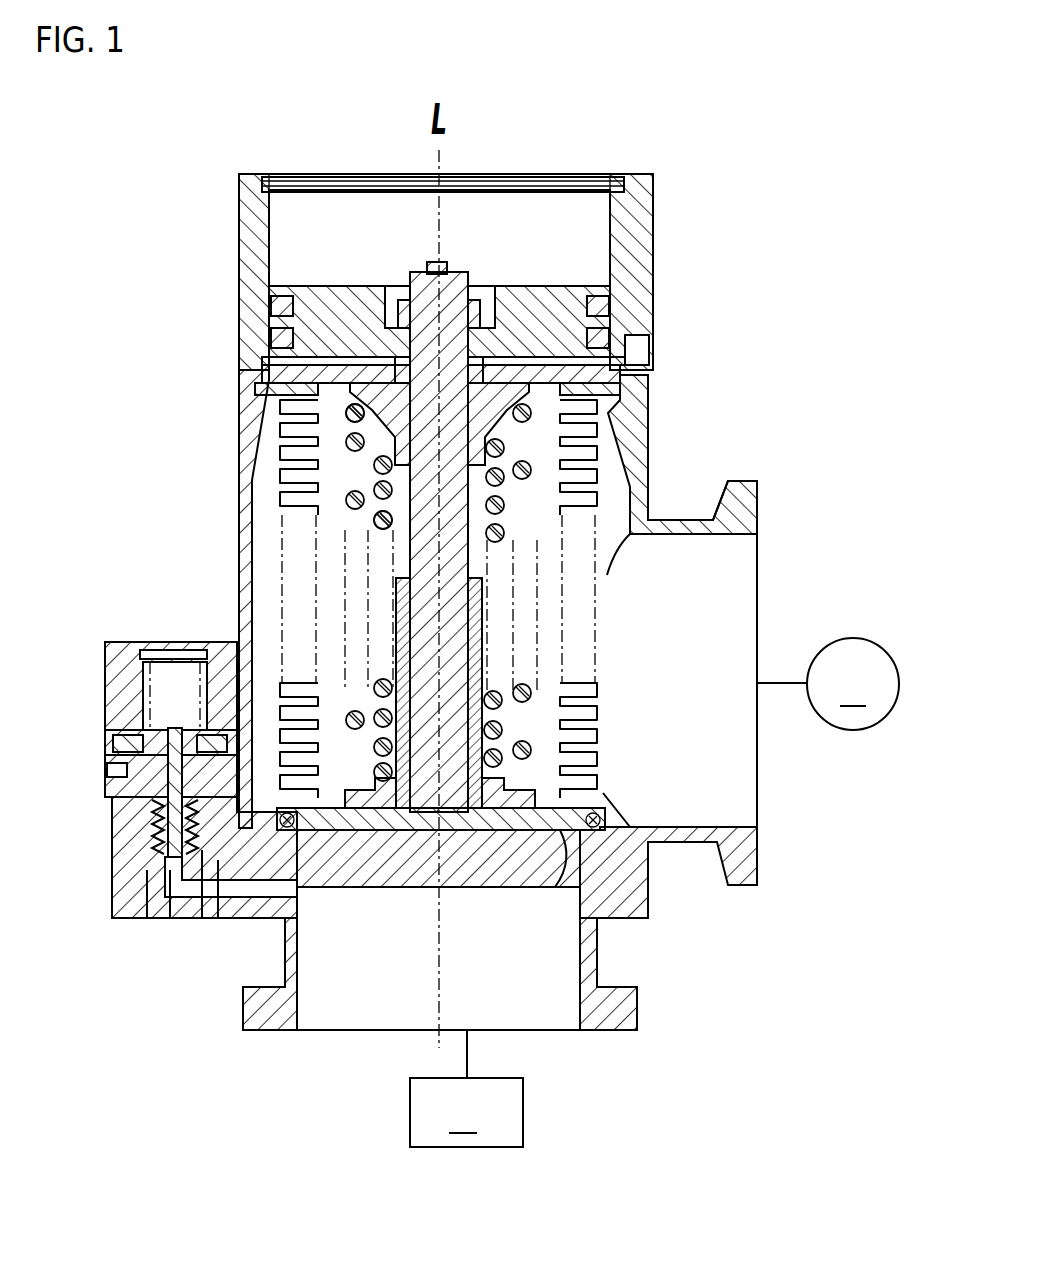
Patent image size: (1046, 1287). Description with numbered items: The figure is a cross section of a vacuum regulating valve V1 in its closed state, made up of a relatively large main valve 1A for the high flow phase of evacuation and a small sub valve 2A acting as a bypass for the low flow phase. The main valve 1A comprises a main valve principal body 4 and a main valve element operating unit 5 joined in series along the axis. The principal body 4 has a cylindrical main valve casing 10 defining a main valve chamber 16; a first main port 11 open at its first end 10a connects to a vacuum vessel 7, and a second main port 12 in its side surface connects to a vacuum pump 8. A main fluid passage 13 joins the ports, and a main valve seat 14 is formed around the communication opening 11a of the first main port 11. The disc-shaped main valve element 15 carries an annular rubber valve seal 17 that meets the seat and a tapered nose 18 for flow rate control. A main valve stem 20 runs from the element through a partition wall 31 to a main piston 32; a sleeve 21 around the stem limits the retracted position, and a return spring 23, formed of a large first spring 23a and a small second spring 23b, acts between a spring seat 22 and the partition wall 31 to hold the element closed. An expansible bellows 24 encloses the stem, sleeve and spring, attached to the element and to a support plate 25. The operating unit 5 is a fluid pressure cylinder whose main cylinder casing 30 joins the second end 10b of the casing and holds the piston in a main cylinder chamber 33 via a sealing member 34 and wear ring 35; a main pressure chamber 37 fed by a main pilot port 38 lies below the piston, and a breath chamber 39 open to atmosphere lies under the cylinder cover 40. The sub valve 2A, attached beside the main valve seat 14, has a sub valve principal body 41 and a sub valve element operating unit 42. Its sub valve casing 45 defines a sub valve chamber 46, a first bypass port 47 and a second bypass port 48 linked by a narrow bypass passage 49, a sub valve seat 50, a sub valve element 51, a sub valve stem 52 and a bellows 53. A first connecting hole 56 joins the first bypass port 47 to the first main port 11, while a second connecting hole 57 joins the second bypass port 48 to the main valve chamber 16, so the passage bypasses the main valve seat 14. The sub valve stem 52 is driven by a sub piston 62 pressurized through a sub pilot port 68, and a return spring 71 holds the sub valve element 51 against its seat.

The main valve 1A is at (549, 125).
The vacuum regulating valve V1 is at (688, 112).
The sub valve 2A is at (82, 618).
The main valve principal body 4 is at (780, 505).
The main valve element operating unit 5 is at (686, 214).
The vacuum vessel 7 is at (466, 1088).
The vacuum pump 8 is at (828, 684).
The main valve casing 10 is at (628, 470).
The first end of main valve casing 10a is at (640, 1000).
The second end of main valve casing 10b is at (260, 392).
The first main port 11 is at (555, 1030).
The communication opening 11a is at (560, 850).
The second main port 12 is at (717, 577).
The main fluid passage 13 is at (268, 632).
The main valve seat 14 is at (648, 873).
The main valve element 15 is at (482, 870).
The main valve chamber 16 is at (280, 456).
The valve seal 17 is at (612, 815).
The nose 18 is at (400, 878).
The main valve stem 20 is at (447, 668).
The sleeve 21 is at (482, 612).
The spring seat 22 is at (530, 787).
The return spring 23 is at (140, 482).
The first spring 23a is at (350, 490).
The second spring 23b is at (380, 512).
The bellows 24 is at (590, 740).
The support plate 25 is at (268, 382).
The main cylinder casing 30 is at (243, 183).
The partition wall 31 is at (616, 408).
The main piston 32 is at (325, 288).
The main cylinder chamber 33 is at (290, 186).
The sealing member 34 is at (273, 303).
The wear ring 35 is at (273, 333).
The main pressure chamber 37 is at (600, 366).
The main pilot port 38 is at (648, 340).
The breath chamber 39 is at (576, 185).
The cylinder cover 40 is at (508, 177).
The sub valve principal body 41 is at (72, 935).
The sub valve element operating unit 42 is at (75, 665).
The sub valve casing 45 is at (114, 880).
The sub valve chamber 46 is at (115, 832).
The first bypass port 47 is at (218, 860).
The second bypass port 48 is at (202, 850).
The bypass passage 49 is at (170, 870).
The sub valve seat 50 is at (168, 850).
The sub valve element 51 is at (147, 870).
The sub valve stem 52 is at (160, 842).
The bellows 53 is at (115, 792).
The first connecting hole 56 is at (292, 892).
The second connecting hole 57 is at (255, 840).
The sub piston 62 is at (112, 702).
The sub pilot port 68 is at (118, 740).
The return spring 71 is at (145, 650).